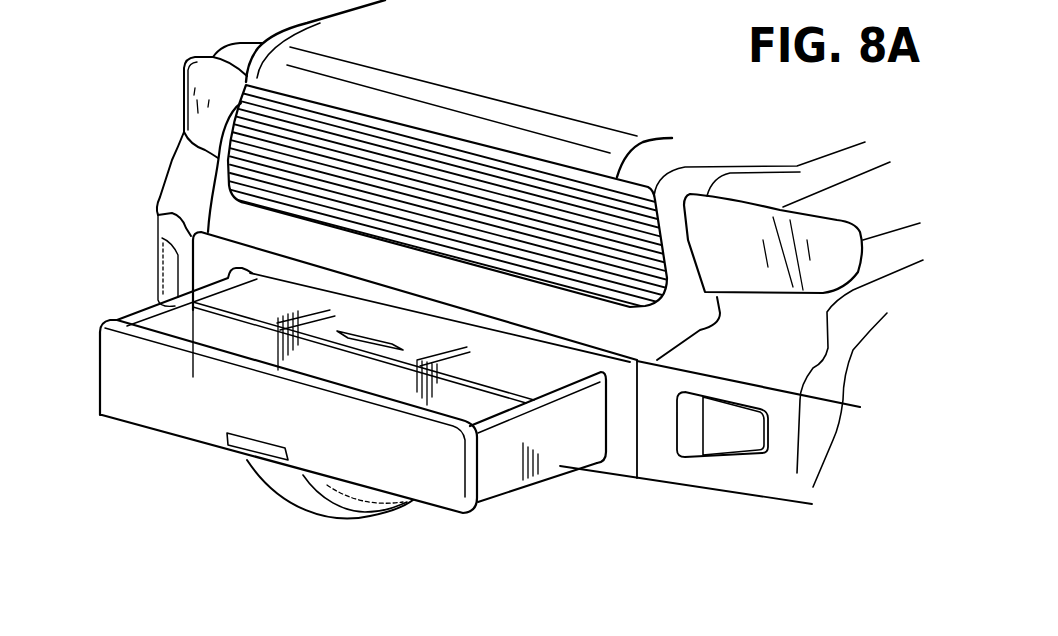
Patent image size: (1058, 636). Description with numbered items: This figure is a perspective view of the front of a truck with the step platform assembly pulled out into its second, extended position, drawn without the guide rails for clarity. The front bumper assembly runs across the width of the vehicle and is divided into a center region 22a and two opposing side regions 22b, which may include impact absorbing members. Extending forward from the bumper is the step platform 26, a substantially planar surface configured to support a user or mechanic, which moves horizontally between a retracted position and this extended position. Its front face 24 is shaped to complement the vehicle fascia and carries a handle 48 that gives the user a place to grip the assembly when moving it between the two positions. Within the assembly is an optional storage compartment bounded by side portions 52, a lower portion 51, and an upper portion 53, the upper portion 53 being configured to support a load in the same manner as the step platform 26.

The center region 22a is at (782, 432).
The side regions 22b is at (617, 457).
The front face 24 is at (163, 397).
The step platform 26 is at (497, 358).
The handle 48 is at (380, 338).
The lower portion 51 is at (497, 497).
The side portions 52 is at (148, 306).
The upper portion 53 is at (225, 298).